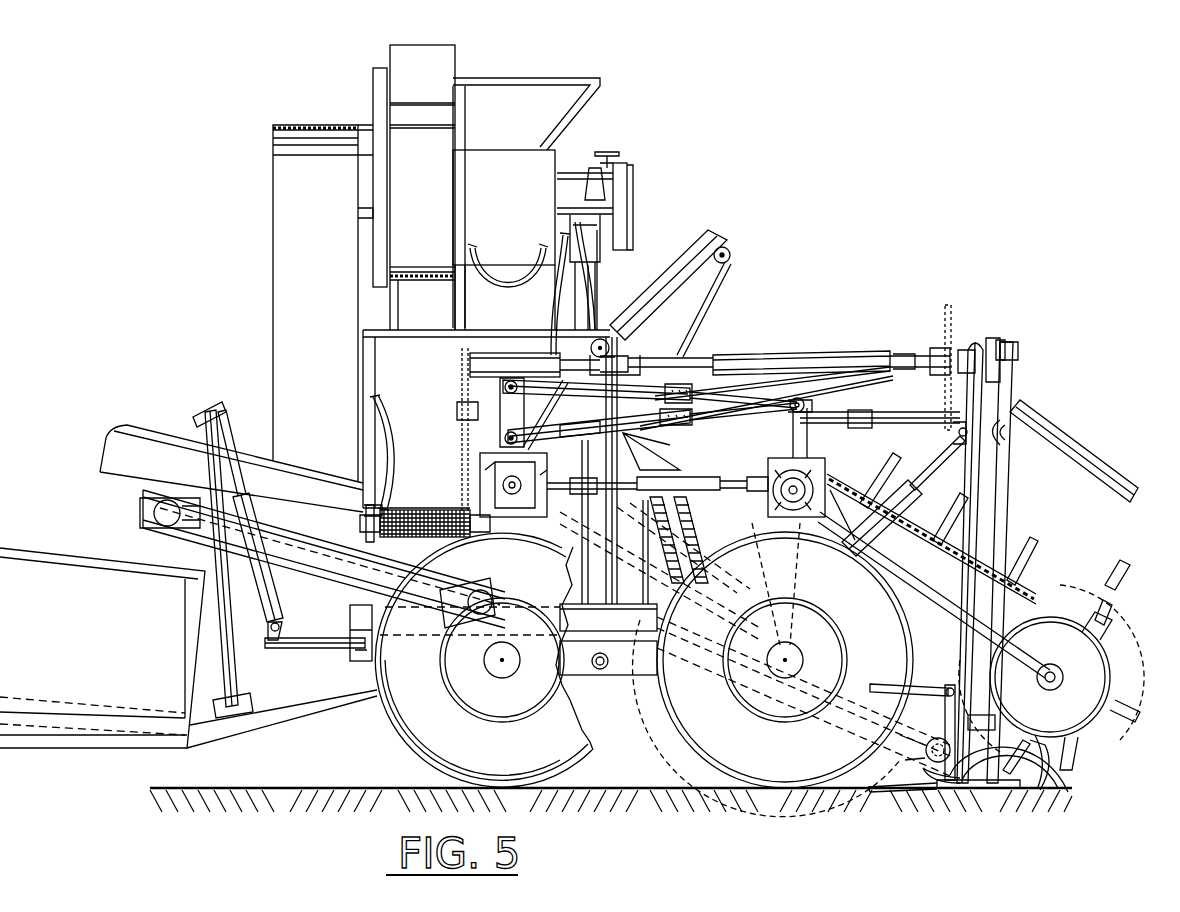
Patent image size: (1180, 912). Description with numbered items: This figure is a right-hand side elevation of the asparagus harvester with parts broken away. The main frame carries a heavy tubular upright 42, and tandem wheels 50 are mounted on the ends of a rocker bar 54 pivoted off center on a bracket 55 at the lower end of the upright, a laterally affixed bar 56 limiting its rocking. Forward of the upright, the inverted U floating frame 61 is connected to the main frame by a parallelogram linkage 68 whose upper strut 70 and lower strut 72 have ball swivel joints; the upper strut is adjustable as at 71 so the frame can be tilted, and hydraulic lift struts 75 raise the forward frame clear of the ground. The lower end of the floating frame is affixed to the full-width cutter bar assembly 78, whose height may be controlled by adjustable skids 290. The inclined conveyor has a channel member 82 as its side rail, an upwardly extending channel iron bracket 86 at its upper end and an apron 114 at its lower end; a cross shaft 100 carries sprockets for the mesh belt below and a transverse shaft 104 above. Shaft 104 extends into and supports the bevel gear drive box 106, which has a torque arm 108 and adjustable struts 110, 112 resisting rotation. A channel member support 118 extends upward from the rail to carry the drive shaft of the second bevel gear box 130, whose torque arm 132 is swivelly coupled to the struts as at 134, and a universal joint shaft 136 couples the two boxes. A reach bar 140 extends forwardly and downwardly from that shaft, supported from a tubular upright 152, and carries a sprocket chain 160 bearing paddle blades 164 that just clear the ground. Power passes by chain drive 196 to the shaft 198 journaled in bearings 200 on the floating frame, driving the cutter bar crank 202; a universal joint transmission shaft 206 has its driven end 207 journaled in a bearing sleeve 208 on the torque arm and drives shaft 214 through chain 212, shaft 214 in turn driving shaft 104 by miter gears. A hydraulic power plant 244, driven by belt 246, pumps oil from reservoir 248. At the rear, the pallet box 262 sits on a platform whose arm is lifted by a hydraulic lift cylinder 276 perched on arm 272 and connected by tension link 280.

The tubular upright 42 is at (624, 375).
The tandem wheels 50 is at (393, 717).
The rocker bar 54 is at (583, 665).
The bracket 55 is at (602, 670).
The bar 56 is at (640, 628).
The inverted U frame member 61 is at (985, 492).
The parallelogram linkage 68 is at (924, 406).
The upper strut 70 is at (933, 413).
The strut length adjustment 71 is at (862, 411).
The lower strut 72 is at (932, 760).
The hydraulic lift strut 75 is at (922, 488).
The cutter bar assembly 78 is at (1033, 813).
The channel member 82 is at (912, 690).
The channel iron bracket 86 is at (682, 478).
The cross shaft 100 is at (965, 790).
The transverse shaft 104 is at (480, 461).
The bevel gear drive box 106 is at (486, 448).
The torque arm 108 is at (500, 397).
The adjustable strut 110 is at (707, 396).
The adjustable strut 112 is at (733, 416).
The apron 114 is at (1035, 765).
The channel member support 118 is at (765, 534).
The second bevel gear box 130 is at (822, 463).
The torque arm 132 is at (872, 358).
The swivel coupling 134 is at (801, 403).
The universal joint shaft 136 is at (662, 480).
The reach bar 140 is at (945, 585).
The tubular upright 152 is at (950, 792).
The sprocket chain 160 is at (1040, 595).
The paddle blade 164 is at (1128, 700).
The chain drive 196 is at (953, 350).
The shaft 198 is at (950, 345).
The bearings 200 is at (973, 340).
The crank 202 is at (1006, 343).
The universal joint transmission shaft 206 is at (790, 354).
The driven end 207 is at (566, 340).
The bearing sleeve 208 is at (600, 290).
The chain drive 212 is at (462, 472).
The drive shaft 214 is at (462, 495).
The hydraulic power plant 244 is at (626, 232).
The belt 246 is at (626, 195).
The oil reservoir 248 is at (540, 195).
The pallet box 262 is at (133, 664).
The arm 272 is at (293, 645).
The hydraulic lift cylinder 276 is at (272, 590).
The tension link 280 is at (235, 655).
The adjustable height skid 290 is at (913, 792).